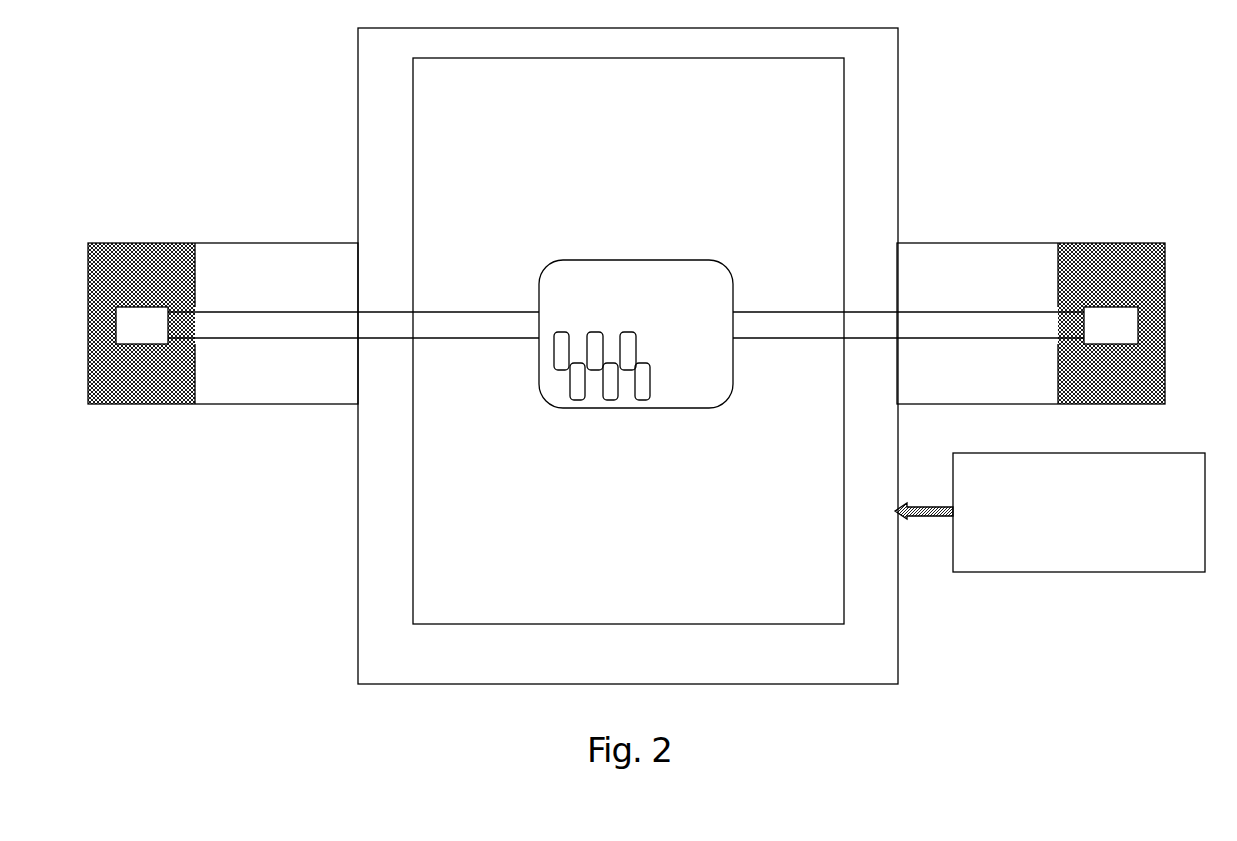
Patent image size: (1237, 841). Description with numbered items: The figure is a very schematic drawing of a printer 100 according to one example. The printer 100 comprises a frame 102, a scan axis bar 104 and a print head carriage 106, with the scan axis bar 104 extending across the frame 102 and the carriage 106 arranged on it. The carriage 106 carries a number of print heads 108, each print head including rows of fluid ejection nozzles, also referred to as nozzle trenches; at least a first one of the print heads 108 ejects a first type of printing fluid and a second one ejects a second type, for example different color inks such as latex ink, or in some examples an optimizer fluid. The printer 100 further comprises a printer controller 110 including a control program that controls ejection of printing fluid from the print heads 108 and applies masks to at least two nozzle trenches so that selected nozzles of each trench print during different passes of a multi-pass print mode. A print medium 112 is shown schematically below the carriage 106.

The printer 100 is at (646, 355).
The frame 102 is at (865, 217).
The scan axis bar 104 is at (1038, 327).
The print head carriage 106 is at (700, 292).
The print heads 108 is at (617, 417).
The printer controller 110 is at (1132, 540).
The print medium 112 is at (738, 572).